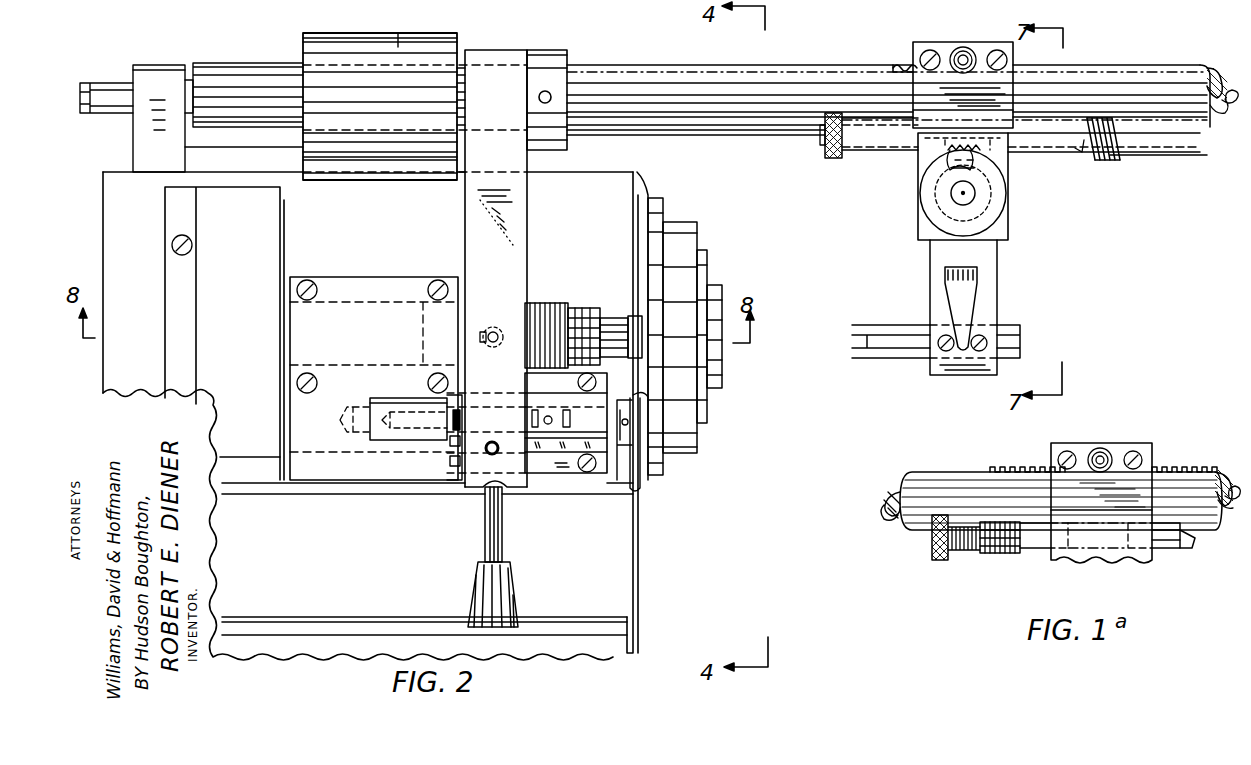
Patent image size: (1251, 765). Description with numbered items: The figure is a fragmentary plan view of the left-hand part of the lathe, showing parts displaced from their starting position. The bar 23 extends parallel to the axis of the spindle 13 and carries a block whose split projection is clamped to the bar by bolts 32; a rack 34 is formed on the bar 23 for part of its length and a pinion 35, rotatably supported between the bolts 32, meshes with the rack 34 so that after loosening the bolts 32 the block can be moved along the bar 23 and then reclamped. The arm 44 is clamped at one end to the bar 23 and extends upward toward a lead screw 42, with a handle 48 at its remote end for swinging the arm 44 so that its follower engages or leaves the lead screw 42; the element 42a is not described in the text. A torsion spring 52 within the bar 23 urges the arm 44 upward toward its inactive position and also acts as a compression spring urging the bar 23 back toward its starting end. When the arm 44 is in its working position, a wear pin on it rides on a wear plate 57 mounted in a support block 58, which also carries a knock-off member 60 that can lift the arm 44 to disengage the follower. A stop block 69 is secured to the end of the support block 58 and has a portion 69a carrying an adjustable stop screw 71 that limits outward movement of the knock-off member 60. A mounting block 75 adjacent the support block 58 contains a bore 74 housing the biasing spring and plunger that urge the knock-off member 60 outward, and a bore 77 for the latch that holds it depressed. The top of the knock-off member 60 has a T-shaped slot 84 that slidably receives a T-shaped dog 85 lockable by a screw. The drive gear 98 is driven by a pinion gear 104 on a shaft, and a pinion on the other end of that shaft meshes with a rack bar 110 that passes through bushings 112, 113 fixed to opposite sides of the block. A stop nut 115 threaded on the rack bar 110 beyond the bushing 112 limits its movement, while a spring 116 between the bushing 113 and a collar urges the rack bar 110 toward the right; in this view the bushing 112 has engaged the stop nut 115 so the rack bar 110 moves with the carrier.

In FIG. 2, the spindle 13 is at (703, 262).
In FIG. 2, the bar 23 is at (661, 79).
In FIG. 1A, the bar 23 is at (927, 477).
In FIG. 2, the bolts 32 is at (930, 48).
In FIG. 2, the rack 34 is at (891, 70).
In FIG. 1A, the rack 34 is at (1022, 469).
In FIG. 2, the pinion 35 is at (963, 48).
In FIG. 2, the lead screw 42 is at (580, 286).
In FIG. 2, the knob extension 42a is at (606, 317).
In FIG. 2, the arm 44 is at (534, 256).
In FIG. 2, the handle 48 is at (468, 590).
In FIG. 2, the torsion spring 52 is at (1233, 98).
In FIG. 1A, the torsion spring 52 is at (883, 498).
In FIG. 2, the wear plate 57 is at (447, 449).
In FIG. 2, the support block 58 is at (449, 466).
In FIG. 2, the knock-off member 60 is at (568, 465).
In FIG. 2, the stop block 69 is at (635, 473).
In FIG. 2, the portion of stop block 69a is at (632, 402).
In FIG. 2, the adjustable stop screw 71 is at (618, 430).
In FIG. 2, the bore 74 is at (353, 407).
In FIG. 2, the mounting block 75 is at (337, 470).
In FIG. 2, the bore 77 is at (407, 401).
In FIG. 2, the T-shaped slot 84 is at (600, 421).
In FIG. 2, the T-shaped dog 85 is at (562, 387).
In FIG. 2, the drive gear 98 is at (1012, 190).
In FIG. 2, the pinion gear 104 is at (1005, 163).
In FIG. 2, the rack bar 110 is at (1145, 132).
In FIG. 1A, the rack bar 110 is at (1185, 546).
In FIG. 2, the bushing 112 is at (901, 158).
In FIG. 1A, the bushing 112 is at (996, 555).
In FIG. 2, the bushing 113 is at (1077, 158).
In FIG. 1A, the bushing 113 is at (1178, 550).
In FIG. 2, the stop nut 115 is at (840, 160).
In FIG. 1A, the stop nut 115 is at (937, 562).
In FIG. 2, the spring 116 is at (1112, 150).